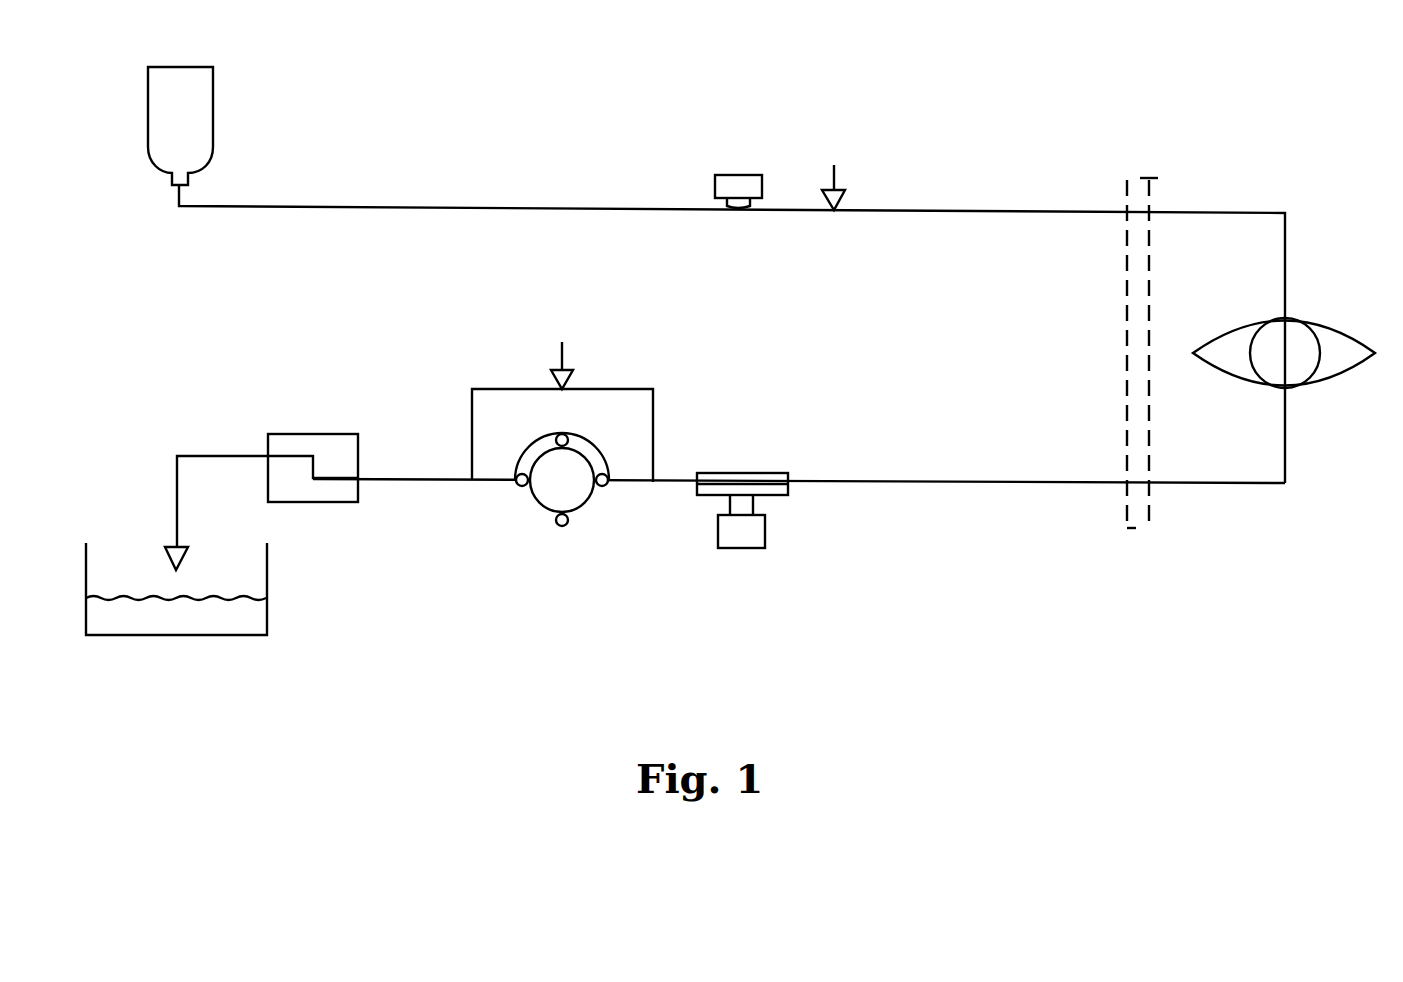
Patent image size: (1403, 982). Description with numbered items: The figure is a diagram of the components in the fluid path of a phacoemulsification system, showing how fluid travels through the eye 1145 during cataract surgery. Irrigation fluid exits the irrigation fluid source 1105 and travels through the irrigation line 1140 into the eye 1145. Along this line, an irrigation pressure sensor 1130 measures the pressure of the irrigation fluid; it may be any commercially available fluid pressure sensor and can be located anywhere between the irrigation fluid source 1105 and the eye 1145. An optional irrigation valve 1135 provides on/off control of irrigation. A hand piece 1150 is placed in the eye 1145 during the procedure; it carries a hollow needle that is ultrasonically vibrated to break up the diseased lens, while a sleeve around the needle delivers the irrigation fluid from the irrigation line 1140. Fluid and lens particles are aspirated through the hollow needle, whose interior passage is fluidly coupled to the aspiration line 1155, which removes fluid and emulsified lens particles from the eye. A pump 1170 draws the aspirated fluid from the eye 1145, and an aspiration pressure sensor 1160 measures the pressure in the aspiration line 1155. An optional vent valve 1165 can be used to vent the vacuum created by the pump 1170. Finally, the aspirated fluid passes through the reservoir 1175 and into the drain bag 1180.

The irrigation fluid source 1105 is at (216, 93).
The irrigation pressure sensor 1130 is at (736, 173).
The irrigation valve 1135 is at (838, 178).
The irrigation line 1140 is at (1032, 211).
The hand piece 1150 is at (1155, 177).
The eye 1145 is at (1327, 385).
The aspiration line 1155 is at (966, 486).
The aspiration pressure sensor 1160 is at (767, 550).
The vent valve 1165 is at (567, 349).
The pump 1170 is at (556, 485).
The reservoir 1175 is at (335, 428).
The drain bag 1180 is at (270, 617).